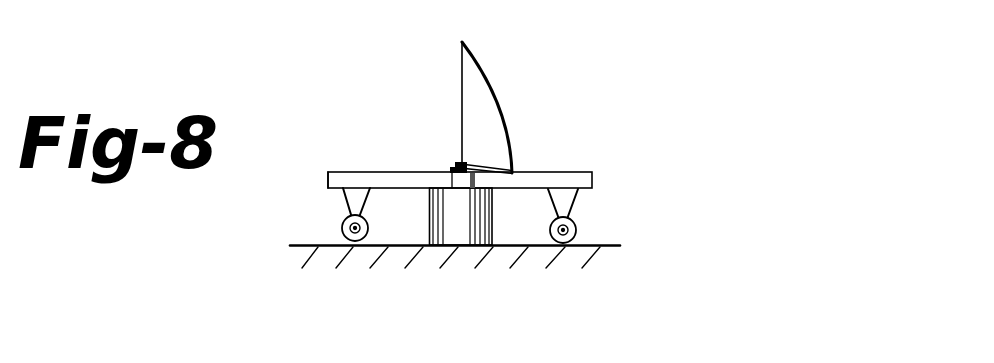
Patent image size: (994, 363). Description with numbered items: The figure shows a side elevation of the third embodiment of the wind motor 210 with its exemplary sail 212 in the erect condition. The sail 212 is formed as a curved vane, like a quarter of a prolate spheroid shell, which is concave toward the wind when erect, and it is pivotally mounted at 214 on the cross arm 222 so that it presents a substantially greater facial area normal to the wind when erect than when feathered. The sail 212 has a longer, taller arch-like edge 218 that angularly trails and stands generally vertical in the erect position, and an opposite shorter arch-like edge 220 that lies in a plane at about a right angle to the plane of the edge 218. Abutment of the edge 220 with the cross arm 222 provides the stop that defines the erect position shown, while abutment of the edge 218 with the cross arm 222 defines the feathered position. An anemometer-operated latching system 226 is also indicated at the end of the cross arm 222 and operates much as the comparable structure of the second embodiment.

The wind motor 210 is at (553, 124).
The sail 212 is at (482, 73).
The pivotal mounting 214 is at (456, 166).
The longer arch-like edge 218 is at (460, 94).
The shorter arch-like edge 220 is at (482, 165).
The cross arm 222 is at (565, 182).
The anemometer-operated latching system 226 is at (331, 171).